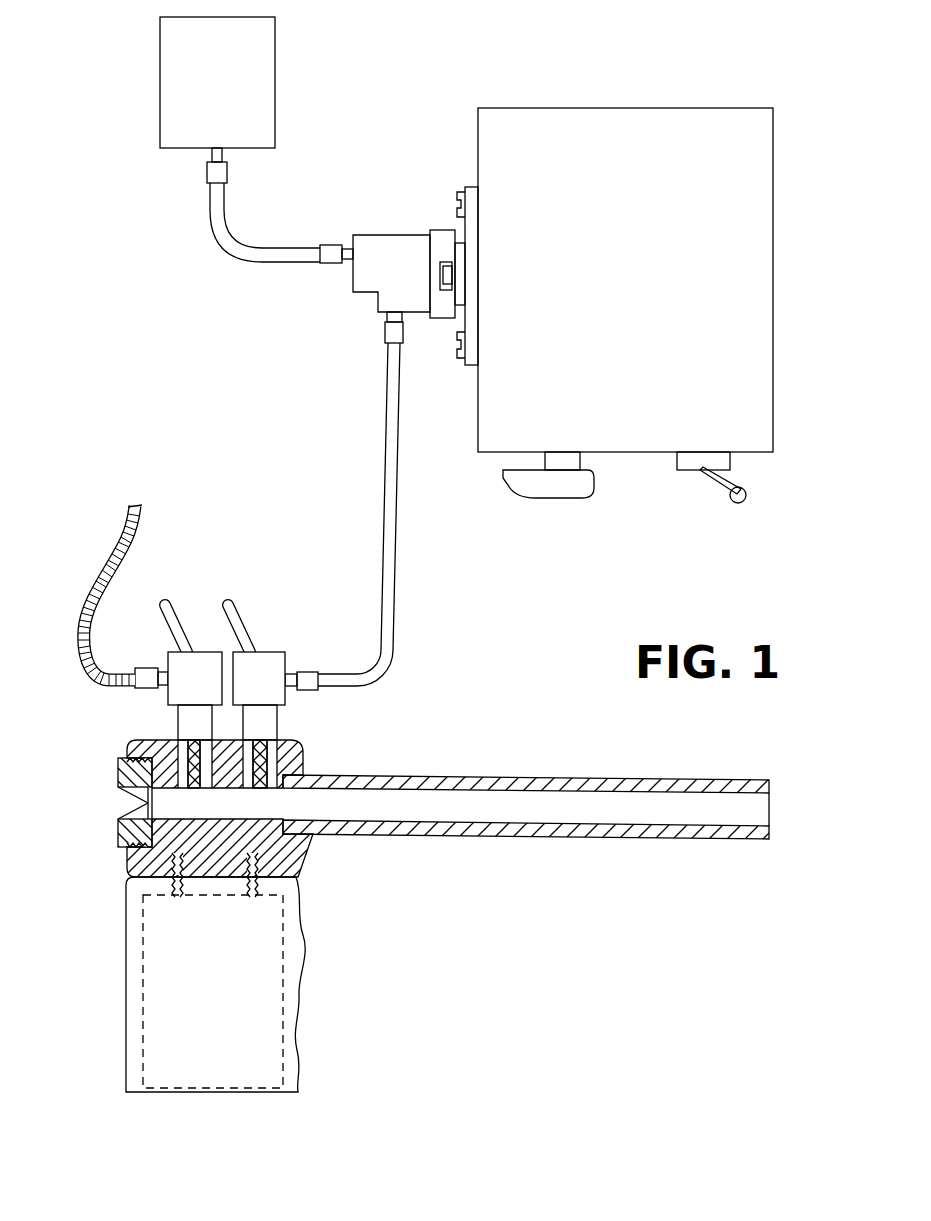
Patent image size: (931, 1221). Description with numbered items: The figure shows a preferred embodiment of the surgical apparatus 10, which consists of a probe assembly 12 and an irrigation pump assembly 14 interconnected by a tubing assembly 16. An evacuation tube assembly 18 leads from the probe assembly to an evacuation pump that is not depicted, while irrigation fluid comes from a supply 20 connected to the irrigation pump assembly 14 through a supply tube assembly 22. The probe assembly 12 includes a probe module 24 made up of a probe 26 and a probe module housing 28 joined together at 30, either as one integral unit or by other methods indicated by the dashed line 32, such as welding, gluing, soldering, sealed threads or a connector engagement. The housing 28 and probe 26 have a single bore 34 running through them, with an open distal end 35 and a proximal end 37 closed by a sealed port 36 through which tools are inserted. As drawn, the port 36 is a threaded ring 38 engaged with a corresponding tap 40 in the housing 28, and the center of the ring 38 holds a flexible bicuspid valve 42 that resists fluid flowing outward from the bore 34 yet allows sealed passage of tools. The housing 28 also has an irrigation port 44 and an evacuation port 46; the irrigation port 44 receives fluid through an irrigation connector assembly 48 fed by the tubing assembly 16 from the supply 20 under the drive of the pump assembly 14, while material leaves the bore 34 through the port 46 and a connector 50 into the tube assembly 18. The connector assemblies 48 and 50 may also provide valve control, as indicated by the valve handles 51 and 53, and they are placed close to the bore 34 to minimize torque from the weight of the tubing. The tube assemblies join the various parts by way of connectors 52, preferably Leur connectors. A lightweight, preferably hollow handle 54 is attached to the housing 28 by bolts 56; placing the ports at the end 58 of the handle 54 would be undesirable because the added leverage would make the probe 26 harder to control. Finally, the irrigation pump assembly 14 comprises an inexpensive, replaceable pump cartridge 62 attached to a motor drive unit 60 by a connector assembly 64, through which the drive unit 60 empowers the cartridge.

The surgical apparatus 10 is at (185, 370).
The probe assembly 12 is at (444, 848).
The irrigation pump assembly 14 is at (415, 241).
The tubing assembly 16 is at (402, 550).
The evacuation tube assembly 18 is at (150, 525).
The supply 20 is at (275, 33).
The supply tube assembly 22 is at (206, 235).
The probe module 24 is at (226, 801).
The probe 26 is at (570, 780).
The probe module housing 28 is at (127, 745).
The joint 30 is at (308, 771).
The dashed line 32 is at (303, 867).
The bore 34 is at (688, 808).
The open distal end 35 is at (776, 808).
The sealed port 36 is at (91, 808).
The proximal end 37 is at (107, 838).
The threaded ring 38 is at (120, 770).
The tap 40 is at (125, 865).
The flexible bicuspid valve 42 is at (118, 805).
The irrigation port 44 is at (277, 743).
The evacuation port 46 is at (175, 740).
The irrigation connector assembly 48 is at (283, 644).
The evacuation connector 50 is at (171, 636).
The valve handle 51 is at (168, 602).
The connector 52 is at (207, 173).
The valve handle 53 is at (252, 578).
The handle 54 is at (255, 1020).
The bolts 56 is at (160, 900).
The end of the handle 58 is at (273, 1096).
The motor drive unit 60 is at (694, 120).
The pump cartridge 62 is at (404, 229).
The connector assembly 64 is at (460, 171).